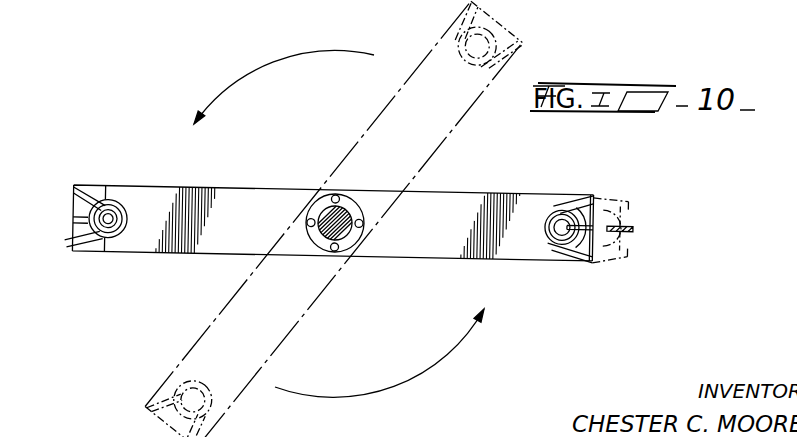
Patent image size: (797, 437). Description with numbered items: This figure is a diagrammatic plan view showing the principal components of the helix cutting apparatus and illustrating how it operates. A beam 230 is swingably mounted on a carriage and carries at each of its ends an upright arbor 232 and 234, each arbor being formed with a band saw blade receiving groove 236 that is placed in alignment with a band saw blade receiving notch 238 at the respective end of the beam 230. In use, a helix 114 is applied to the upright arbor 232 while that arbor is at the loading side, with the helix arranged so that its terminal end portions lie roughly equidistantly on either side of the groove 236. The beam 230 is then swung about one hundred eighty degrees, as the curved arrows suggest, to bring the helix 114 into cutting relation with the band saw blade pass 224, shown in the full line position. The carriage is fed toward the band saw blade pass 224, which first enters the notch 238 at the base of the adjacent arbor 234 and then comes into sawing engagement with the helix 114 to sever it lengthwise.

The helix 114 is at (116, 244).
The band saw blade pass 224 is at (634, 223).
The beam 230 is at (221, 219).
The upright arbor 232 is at (109, 217).
The upright arbor 234 is at (564, 190).
The band saw blade receiving groove 236 is at (97, 217).
The band saw blade receiving notch 238 is at (80, 214).